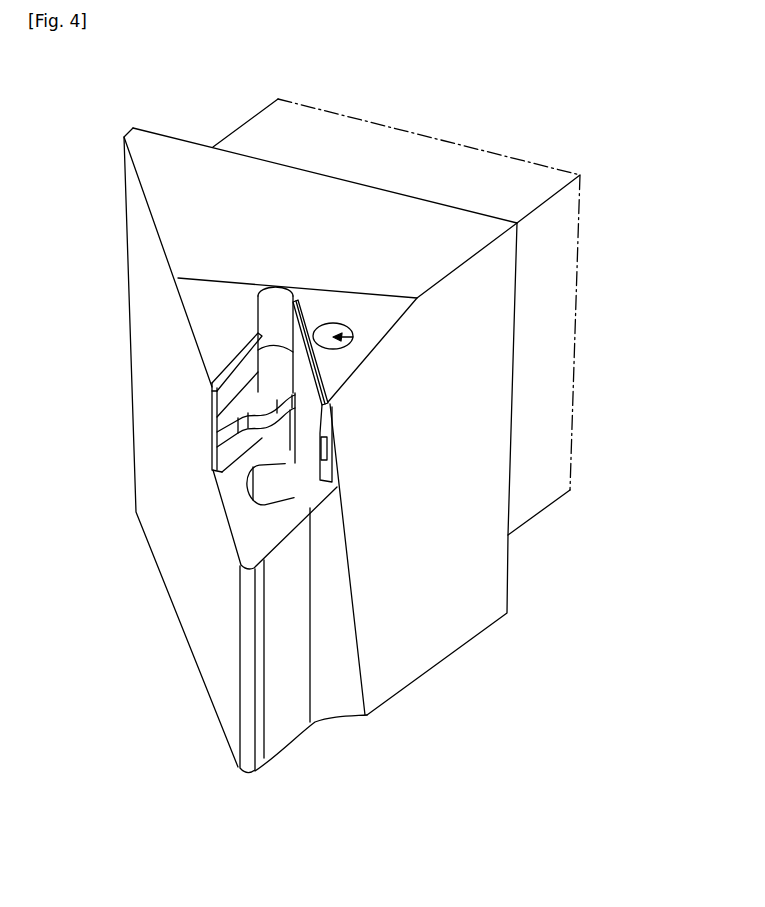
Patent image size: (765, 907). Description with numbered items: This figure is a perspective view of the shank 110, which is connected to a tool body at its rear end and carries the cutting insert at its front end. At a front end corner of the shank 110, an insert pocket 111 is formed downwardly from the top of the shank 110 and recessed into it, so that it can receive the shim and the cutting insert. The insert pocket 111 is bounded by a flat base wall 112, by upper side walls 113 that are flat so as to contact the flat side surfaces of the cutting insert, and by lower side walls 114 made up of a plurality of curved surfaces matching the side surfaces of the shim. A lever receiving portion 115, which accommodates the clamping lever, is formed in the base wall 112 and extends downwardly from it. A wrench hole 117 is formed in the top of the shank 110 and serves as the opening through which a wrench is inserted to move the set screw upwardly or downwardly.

The shank 110 is at (177, 157).
The insert pocket 111 is at (245, 528).
The base wall 112 is at (262, 533).
The upper side walls 113 is at (235, 383).
The lower side walls 114 is at (262, 413).
The lever receiving portion 115 is at (271, 489).
The wrench hole 117 is at (353, 337).